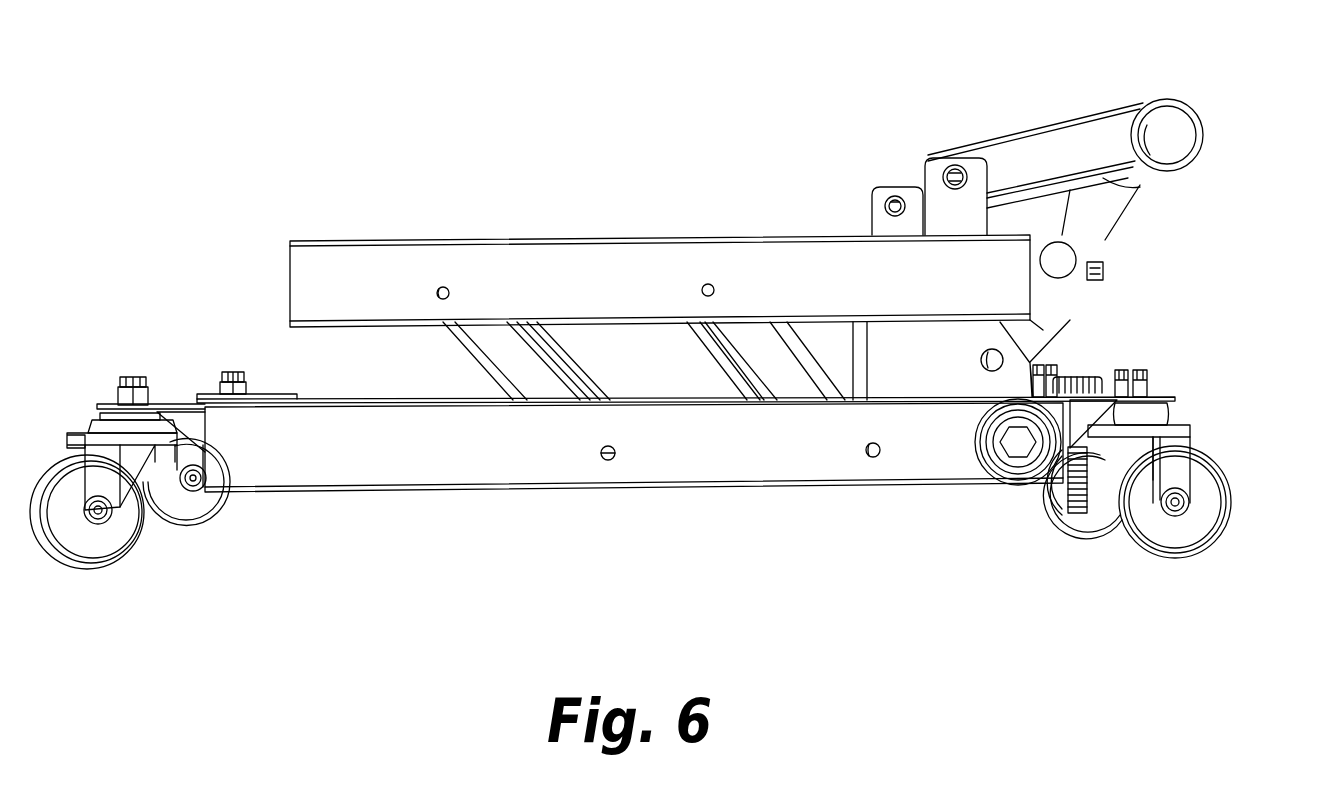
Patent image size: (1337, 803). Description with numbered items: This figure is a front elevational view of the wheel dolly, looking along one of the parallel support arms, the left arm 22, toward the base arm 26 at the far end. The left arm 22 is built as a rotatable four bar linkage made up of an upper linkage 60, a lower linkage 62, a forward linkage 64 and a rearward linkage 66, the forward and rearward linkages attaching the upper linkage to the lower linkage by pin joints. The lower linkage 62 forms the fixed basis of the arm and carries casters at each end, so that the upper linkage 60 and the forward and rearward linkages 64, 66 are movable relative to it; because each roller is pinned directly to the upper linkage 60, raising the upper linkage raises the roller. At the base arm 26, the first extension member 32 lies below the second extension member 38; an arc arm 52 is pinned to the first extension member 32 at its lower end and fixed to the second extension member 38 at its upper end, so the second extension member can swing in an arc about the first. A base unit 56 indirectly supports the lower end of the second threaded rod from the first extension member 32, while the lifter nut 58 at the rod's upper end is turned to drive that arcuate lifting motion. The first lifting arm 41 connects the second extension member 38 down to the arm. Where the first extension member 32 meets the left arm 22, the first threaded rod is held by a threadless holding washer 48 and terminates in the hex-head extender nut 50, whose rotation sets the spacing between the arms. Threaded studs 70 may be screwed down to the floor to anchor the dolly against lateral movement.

The left arm 22 is at (253, 287).
The base arm 26 is at (1072, 355).
The first extension member 32 is at (993, 457).
The second extension member 38 is at (1197, 107).
The first lifting arm 41 is at (1027, 157).
The threadless holding washer 48 is at (1022, 443).
The extender nut 50 is at (1078, 466).
The arc arm 52 is at (1117, 203).
The base unit 56 is at (907, 370).
The lifter nut 58 is at (1106, 262).
The upper linkage 60 is at (513, 262).
The lower linkage 62 is at (522, 462).
The forward linkage 64 is at (497, 352).
The rearward linkage 66 is at (767, 348).
The threaded studs 70 is at (1093, 477).